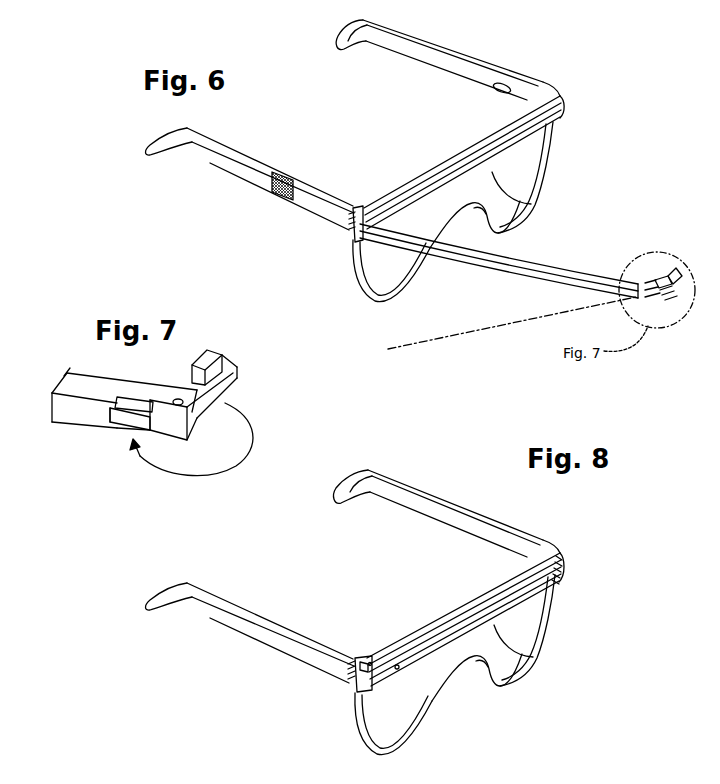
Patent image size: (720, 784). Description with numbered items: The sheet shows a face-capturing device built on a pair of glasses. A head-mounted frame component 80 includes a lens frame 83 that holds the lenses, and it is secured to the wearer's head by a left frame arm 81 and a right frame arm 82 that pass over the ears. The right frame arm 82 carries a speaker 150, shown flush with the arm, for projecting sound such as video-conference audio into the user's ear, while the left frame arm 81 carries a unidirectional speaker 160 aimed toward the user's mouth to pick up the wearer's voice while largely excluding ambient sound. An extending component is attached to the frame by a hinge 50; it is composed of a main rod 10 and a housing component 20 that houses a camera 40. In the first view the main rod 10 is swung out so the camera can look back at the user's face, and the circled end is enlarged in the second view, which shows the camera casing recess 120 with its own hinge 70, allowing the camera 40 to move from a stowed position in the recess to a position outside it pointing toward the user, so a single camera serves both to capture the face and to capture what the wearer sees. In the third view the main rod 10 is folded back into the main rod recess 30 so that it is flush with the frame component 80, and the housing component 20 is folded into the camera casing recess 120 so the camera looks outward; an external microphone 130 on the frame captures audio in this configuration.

In FIG. 6, the main rod 10 is at (527, 282).
In FIG. 7, the main rod 10 is at (87, 420).
In FIG. 8, the main rod 10 is at (420, 662).
In FIG. 7, the housing component 20 is at (223, 382).
In FIG. 8, the housing component 20 is at (563, 557).
In FIG. 6, the main rod recess 30 is at (667, 268).
In FIG. 7, the camera 40 is at (215, 352).
In FIG. 8, the camera 40 is at (560, 577).
In FIG. 8, the hinge 50 is at (357, 687).
In FIG. 7, the hinge 70 is at (178, 398).
In FIG. 6, the head-mounted frame component 80 is at (391, 161).
In FIG. 8, the head-mounted frame component 80 is at (393, 623).
In FIG. 6, the left frame arm 81 is at (448, 67).
In FIG. 8, the left frame arm 81 is at (468, 505).
In FIG. 6, the right frame arm 82 is at (250, 187).
In FIG. 8, the right frame arm 82 is at (268, 632).
In FIG. 6, the lens frame 83 is at (533, 205).
In FIG. 8, the lens frame 83 is at (530, 657).
In FIG. 7, the camera casing recess 120 is at (127, 428).
In FIG. 8, the external microphone 130 is at (397, 663).
In FIG. 6, the speaker 150 is at (276, 198).
In FIG. 6, the unidirectional speaker 160 is at (490, 92).